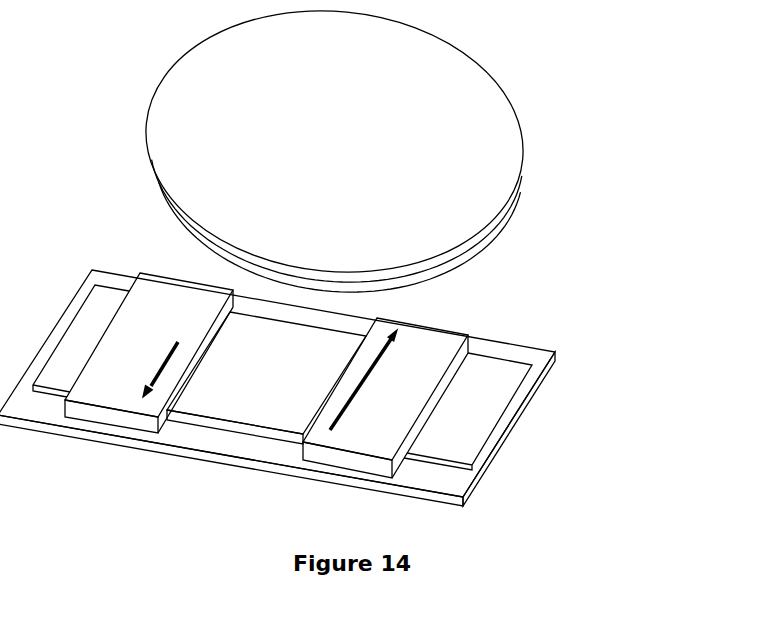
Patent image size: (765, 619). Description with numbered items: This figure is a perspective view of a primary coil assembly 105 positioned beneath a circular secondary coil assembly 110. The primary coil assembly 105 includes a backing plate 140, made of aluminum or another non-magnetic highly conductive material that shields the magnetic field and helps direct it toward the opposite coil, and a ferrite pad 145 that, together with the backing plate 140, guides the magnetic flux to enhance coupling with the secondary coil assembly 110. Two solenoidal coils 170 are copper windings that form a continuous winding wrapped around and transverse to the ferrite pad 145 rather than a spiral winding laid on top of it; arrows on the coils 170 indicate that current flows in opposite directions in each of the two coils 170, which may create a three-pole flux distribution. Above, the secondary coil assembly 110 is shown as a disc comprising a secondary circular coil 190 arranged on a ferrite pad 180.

The primary coil assembly 105 is at (320, 388).
The secondary coil assembly 110 is at (363, 146).
The backing plate 140 is at (242, 448).
The ferrite pad 145 is at (258, 392).
The solenoidal coils 170 is at (131, 338).
The ferrite pad 180 is at (259, 80).
The circular coil 190 is at (375, 282).